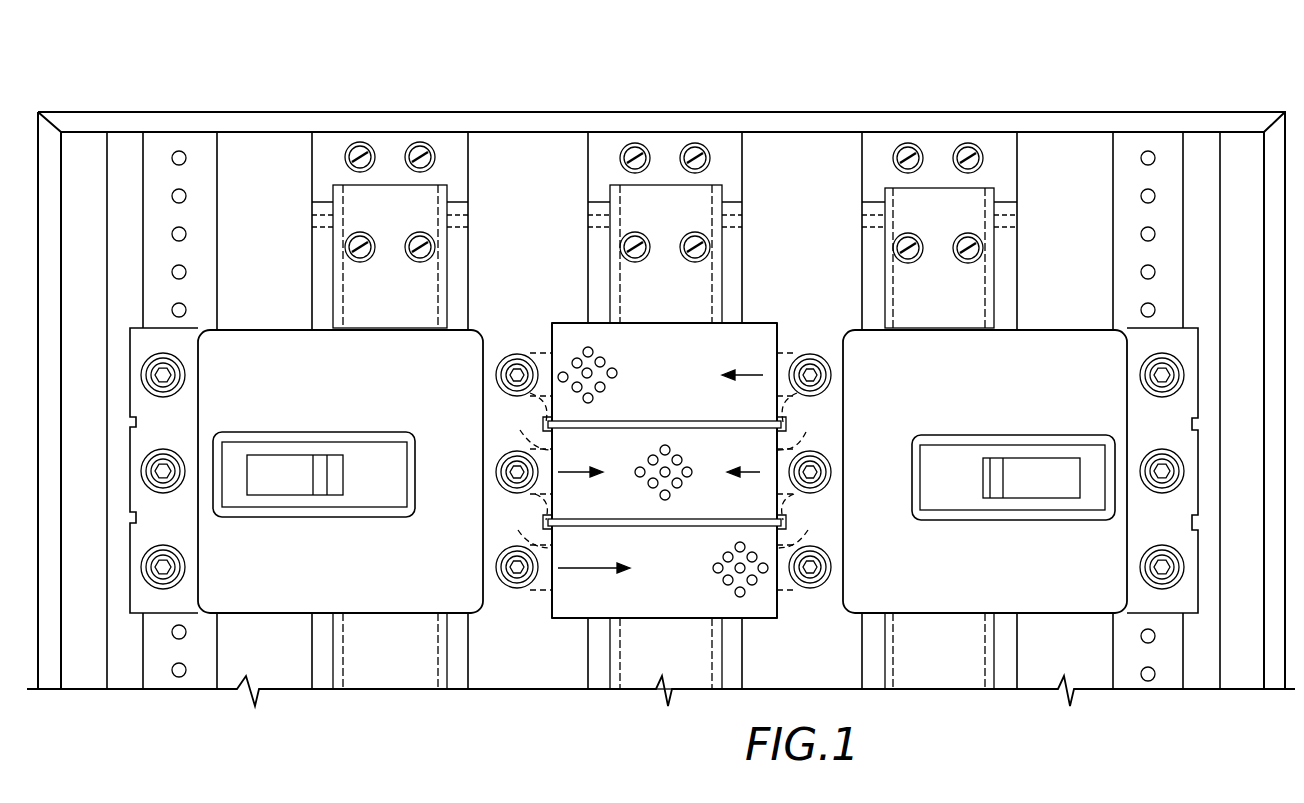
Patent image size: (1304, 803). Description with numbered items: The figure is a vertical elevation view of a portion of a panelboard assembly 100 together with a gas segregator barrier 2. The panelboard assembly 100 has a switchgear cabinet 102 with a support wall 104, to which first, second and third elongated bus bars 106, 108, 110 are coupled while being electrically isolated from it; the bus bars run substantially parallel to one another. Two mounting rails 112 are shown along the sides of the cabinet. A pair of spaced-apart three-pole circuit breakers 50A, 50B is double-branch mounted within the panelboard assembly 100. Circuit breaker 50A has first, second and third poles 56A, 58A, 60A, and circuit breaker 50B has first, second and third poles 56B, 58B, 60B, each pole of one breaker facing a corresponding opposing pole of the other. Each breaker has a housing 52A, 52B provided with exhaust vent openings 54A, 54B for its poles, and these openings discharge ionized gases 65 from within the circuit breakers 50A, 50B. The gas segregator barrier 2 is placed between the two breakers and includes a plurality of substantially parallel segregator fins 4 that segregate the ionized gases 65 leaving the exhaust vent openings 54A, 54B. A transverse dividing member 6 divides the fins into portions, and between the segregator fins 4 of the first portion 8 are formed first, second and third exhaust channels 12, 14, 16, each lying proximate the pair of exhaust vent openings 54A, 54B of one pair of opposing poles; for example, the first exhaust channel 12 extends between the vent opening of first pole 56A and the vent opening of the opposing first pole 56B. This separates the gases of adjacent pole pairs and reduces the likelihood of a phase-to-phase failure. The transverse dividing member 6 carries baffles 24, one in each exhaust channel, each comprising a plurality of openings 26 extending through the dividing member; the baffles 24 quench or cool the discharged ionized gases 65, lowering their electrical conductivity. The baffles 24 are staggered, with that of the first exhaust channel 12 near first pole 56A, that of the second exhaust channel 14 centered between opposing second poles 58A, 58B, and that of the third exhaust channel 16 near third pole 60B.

The gas segregator barrier 2 is at (670, 640).
The segregator fins 4 is at (677, 322).
The transverse dividing member 6 is at (732, 416).
The first portion 8 is at (760, 304).
The first exhaust channel 12 is at (760, 345).
The second exhaust channel 14 is at (770, 503).
The third exhaust channel 16 is at (772, 602).
The baffles 24 is at (622, 352).
The openings 26 is at (612, 378).
The ionized gases 65 is at (750, 375).
The circuit breaker 50A is at (256, 597).
The circuit breaker 50B is at (1076, 606).
The housing 52A is at (362, 598).
The housing 52B is at (935, 598).
The exhaust vent openings 54A is at (524, 471).
The exhaust vent openings 54B is at (809, 471).
The first pole 56A is at (471, 372).
The second pole 58A is at (476, 451).
The third pole 60A is at (471, 565).
The first pole 56B is at (856, 375).
The second pole 58B is at (852, 462).
The third pole 60B is at (856, 567).
The panelboard assembly 100 is at (541, 739).
The switchgear cabinet 102 is at (250, 112).
The support wall 104 is at (266, 167).
The first elongated bus bar 106 is at (350, 205).
The second elongated bus bar 108 is at (638, 205).
The third elongated bus bar 110 is at (905, 205).
The mounting rails 112 is at (205, 277).